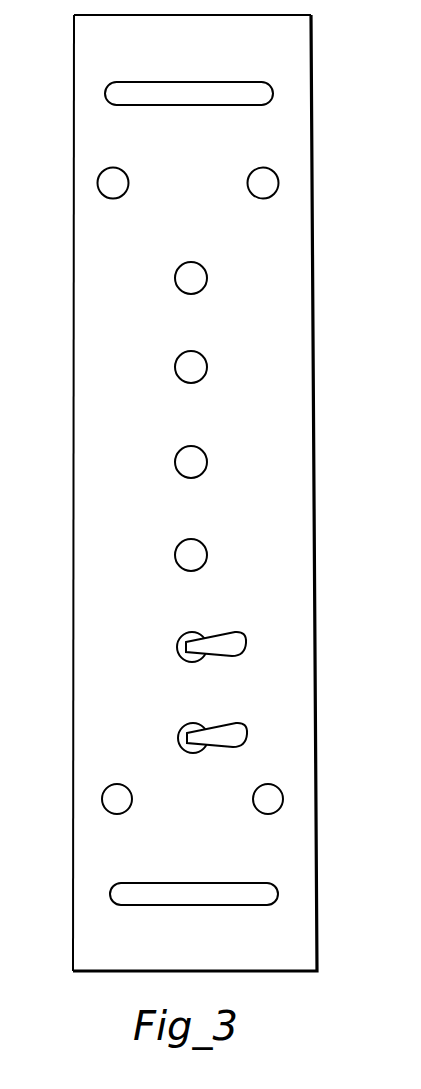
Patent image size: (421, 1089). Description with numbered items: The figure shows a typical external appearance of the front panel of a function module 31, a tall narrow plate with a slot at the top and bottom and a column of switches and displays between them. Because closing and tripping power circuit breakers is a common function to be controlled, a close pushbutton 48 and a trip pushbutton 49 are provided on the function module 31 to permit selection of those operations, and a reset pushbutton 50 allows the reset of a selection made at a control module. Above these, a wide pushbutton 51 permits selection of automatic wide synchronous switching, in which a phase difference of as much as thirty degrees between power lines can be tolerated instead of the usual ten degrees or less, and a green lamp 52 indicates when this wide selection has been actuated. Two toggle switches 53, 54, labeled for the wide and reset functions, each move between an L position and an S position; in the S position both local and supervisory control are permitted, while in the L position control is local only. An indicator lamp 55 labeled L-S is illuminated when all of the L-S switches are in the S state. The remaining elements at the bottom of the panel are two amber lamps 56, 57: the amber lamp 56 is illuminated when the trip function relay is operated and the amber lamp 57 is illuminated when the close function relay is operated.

The function module 31 is at (295, 61).
The pushbutton 48 is at (175, 461).
The pushbutton 49 is at (207, 553).
The pushbutton 50 is at (206, 364).
The pushbutton 51 is at (205, 273).
The lamp 52 is at (279, 183).
The switch 53 is at (181, 640).
The switch 54 is at (178, 736).
The indicator lamp 55 is at (129, 183).
The amber lamp 56 is at (102, 800).
The amber lamp 57 is at (283, 799).